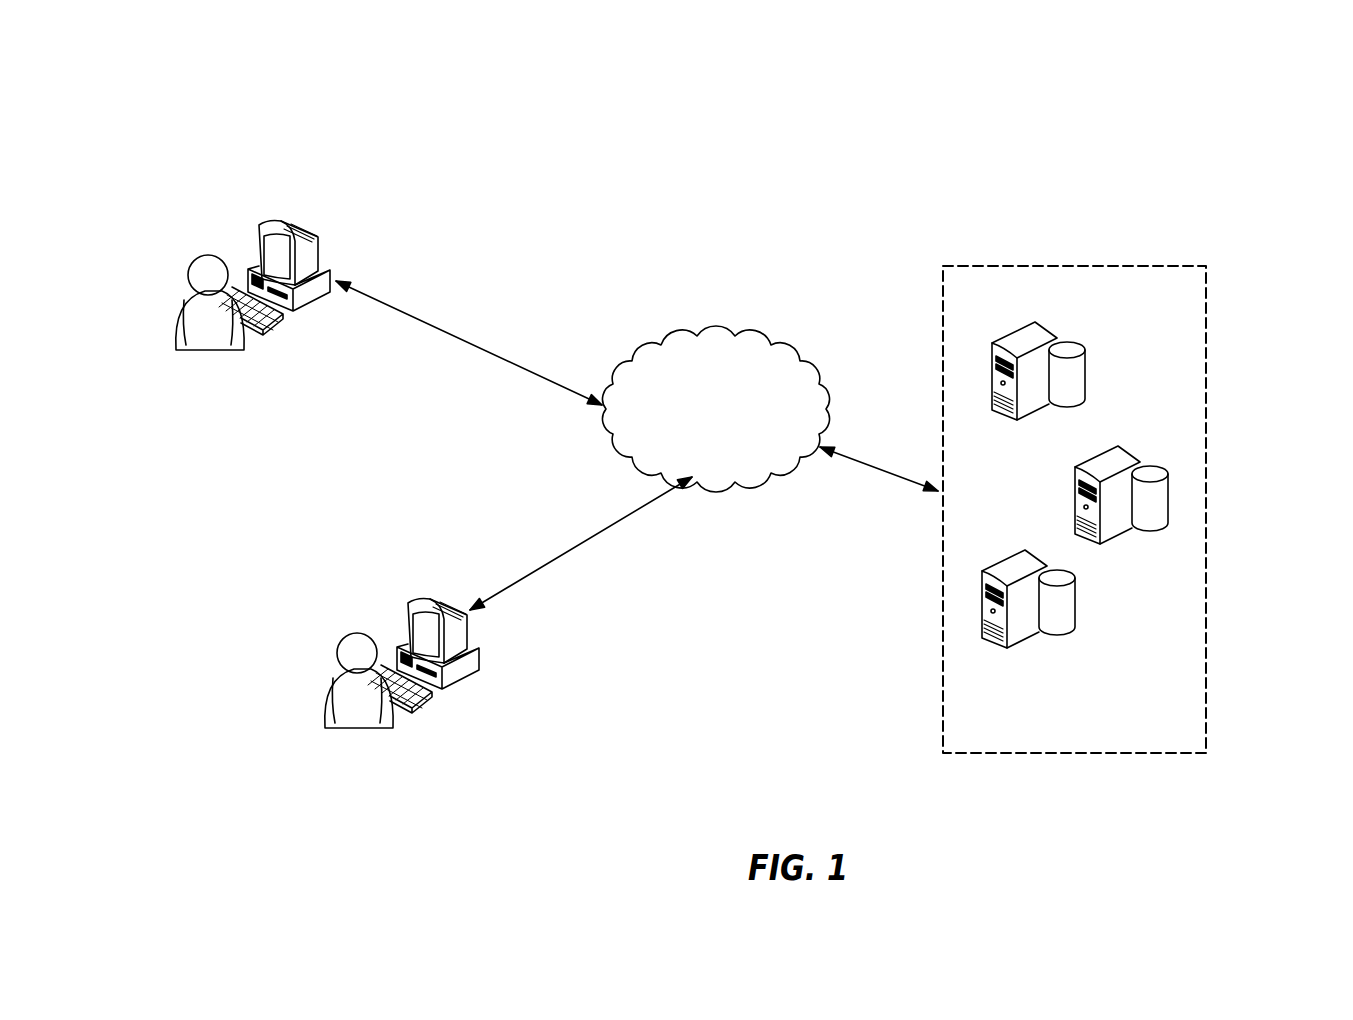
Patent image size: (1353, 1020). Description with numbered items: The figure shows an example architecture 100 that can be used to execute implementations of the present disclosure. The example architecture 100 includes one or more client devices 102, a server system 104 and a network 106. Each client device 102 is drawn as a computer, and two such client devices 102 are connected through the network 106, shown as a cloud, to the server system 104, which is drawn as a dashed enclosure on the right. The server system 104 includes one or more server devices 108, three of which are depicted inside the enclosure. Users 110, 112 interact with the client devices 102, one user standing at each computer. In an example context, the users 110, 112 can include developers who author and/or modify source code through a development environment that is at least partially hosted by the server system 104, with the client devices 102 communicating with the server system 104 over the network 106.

The example architecture 100 is at (570, 97).
The client device 102 is at (259, 225).
The server system 104 is at (1075, 265).
The network 106 is at (721, 334).
The server device 108 is at (1085, 355).
The user 110 is at (210, 350).
The user 112 is at (374, 713).